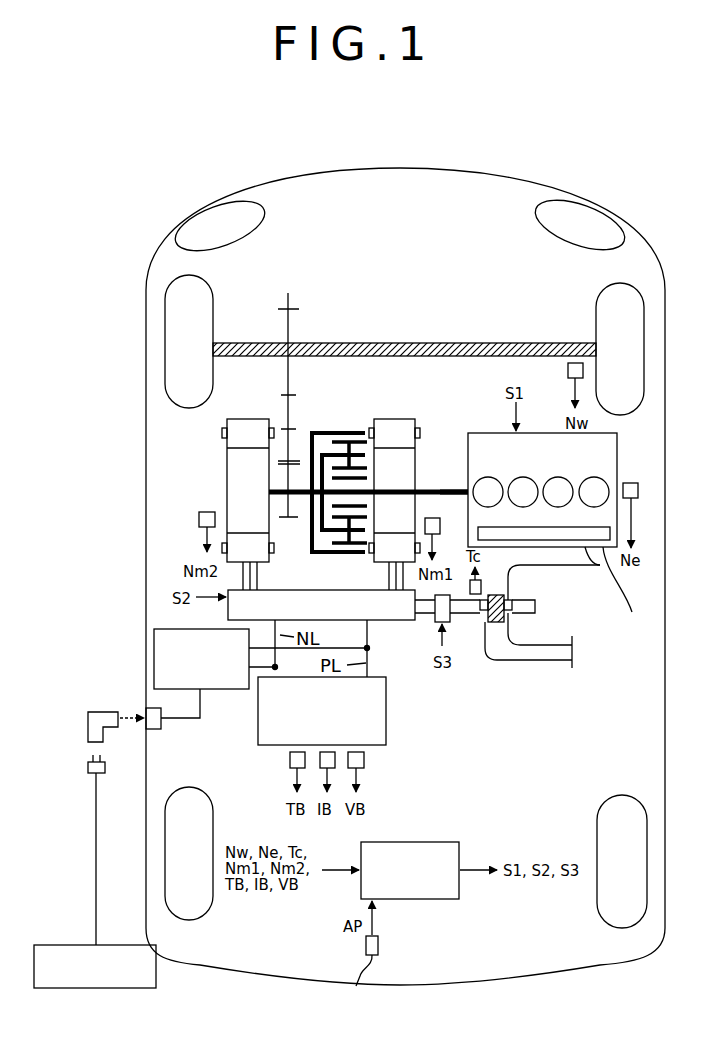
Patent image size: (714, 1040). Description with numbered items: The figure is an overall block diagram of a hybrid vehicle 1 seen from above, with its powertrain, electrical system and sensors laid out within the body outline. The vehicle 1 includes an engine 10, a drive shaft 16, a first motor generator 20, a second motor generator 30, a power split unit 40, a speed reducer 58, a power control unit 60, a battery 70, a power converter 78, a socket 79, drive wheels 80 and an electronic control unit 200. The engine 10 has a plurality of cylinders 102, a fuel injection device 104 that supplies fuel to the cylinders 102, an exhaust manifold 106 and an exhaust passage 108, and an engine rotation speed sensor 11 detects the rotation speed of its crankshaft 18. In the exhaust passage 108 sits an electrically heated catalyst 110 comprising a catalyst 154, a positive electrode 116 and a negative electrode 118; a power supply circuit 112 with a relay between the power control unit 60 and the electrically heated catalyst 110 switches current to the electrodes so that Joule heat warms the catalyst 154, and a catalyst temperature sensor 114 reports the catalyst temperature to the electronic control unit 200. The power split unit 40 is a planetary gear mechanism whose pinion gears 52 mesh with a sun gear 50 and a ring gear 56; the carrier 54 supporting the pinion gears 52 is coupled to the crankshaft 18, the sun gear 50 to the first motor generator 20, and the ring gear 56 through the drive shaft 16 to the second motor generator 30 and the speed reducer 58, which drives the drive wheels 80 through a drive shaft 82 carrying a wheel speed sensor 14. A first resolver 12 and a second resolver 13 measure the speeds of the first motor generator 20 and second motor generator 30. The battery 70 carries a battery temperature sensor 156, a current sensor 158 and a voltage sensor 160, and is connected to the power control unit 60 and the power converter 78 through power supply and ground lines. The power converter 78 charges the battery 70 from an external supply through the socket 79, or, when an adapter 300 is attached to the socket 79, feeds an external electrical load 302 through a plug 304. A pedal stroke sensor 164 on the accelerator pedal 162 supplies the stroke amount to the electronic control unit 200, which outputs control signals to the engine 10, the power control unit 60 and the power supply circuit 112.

The hybrid vehicle 1 is at (406, 149).
The engine 10 is at (542, 498).
The engine rotation speed sensor 11 is at (632, 483).
The first resolver 12 is at (438, 518).
The second resolver 13 is at (206, 512).
The wheel speed sensor 14 is at (568, 371).
The drive shaft 16 is at (307, 500).
The crankshaft 18 is at (463, 488).
The first motor generator 20 is at (391, 419).
The second motor generator 30 is at (243, 419).
The power split unit 40 is at (381, 485).
The sun gear 50 is at (356, 498).
The pinion gears 52 is at (353, 552).
The carrier 54 is at (324, 548).
The ring gear 56 is at (335, 433).
The speed reducer 58 is at (288, 293).
The power control unit 60 is at (227, 612).
The battery 70 is at (258, 714).
The power converter 78 is at (155, 630).
The socket 79 is at (163, 728).
The drive wheels 80 is at (604, 290).
The drive shaft 82 is at (471, 343).
The cylinders 102 is at (560, 478).
The fuel injection device 104 is at (585, 546).
The exhaust manifold 106 is at (620, 592).
The exhaust passage 108 is at (548, 637).
The electrically heated catalyst 110 is at (516, 630).
The power supply circuit 112 is at (439, 624).
The catalyst temperature sensor 114 is at (482, 626).
The positive electrode 116 is at (492, 596).
The negative electrode 118 is at (542, 609).
The catalyst 154 is at (497, 624).
The battery temperature sensor 156 is at (290, 761).
The current sensor 158 is at (328, 750).
The voltage sensor 160 is at (364, 760).
The accelerator pedal 162 is at (359, 985).
The pedal stroke sensor 164 is at (366, 946).
The electronic control unit 200 is at (410, 899).
The adapter 300 is at (100, 712).
The electrical load 302 is at (46, 945).
The plug 304 is at (88, 770).